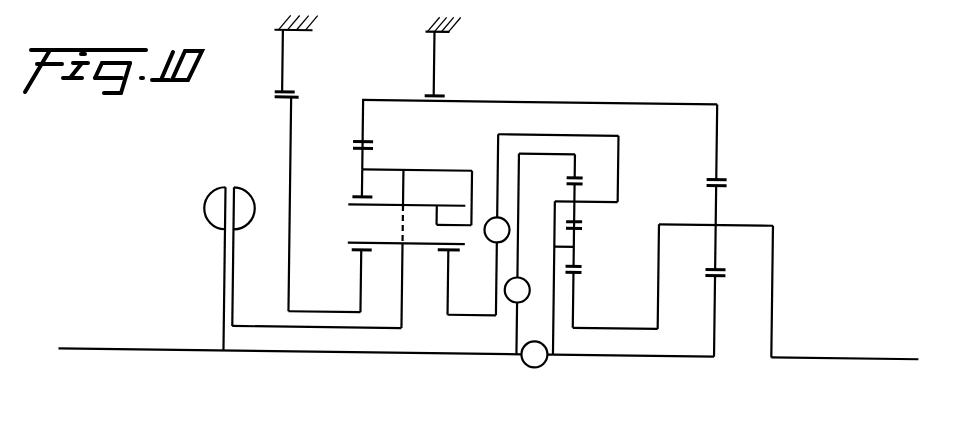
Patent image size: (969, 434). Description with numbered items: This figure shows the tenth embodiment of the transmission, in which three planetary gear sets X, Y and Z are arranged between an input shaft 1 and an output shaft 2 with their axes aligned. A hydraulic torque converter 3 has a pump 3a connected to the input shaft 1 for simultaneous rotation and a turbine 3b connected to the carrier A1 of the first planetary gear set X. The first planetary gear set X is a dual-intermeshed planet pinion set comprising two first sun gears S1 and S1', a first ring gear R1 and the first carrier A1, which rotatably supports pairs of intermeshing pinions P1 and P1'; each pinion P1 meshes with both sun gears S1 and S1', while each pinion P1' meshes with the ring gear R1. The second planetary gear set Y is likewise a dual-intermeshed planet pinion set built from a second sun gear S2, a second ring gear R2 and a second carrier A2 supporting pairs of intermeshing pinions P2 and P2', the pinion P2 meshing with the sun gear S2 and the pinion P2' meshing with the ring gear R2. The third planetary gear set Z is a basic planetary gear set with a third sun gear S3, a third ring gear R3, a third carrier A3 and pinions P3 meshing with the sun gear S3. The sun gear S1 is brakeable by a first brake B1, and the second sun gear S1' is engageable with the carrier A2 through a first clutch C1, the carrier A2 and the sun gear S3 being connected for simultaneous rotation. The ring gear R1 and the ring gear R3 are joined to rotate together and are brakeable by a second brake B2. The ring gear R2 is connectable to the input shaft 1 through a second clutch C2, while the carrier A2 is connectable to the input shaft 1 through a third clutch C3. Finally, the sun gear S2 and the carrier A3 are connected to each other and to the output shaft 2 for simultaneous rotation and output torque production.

The input shaft 1 is at (111, 353).
The output shaft 2 is at (817, 356).
The hydraulic torque converter 3 is at (261, 255).
The pump 3a is at (212, 227).
The turbine 3b is at (242, 230).
The first brake B1 is at (287, 89).
The second brake B2 is at (443, 94).
The first clutch C1 is at (494, 243).
The second clutch C2 is at (520, 277).
The third clutch C3 is at (539, 367).
The first planetary gear set X is at (393, 183).
The second planetary gear set Y is at (585, 273).
The third planetary gear set Z is at (700, 252).
The first ring gear R1 is at (362, 129).
The pinion P1 is at (406, 246).
The pinion P1' is at (387, 187).
The first sun gear S1 is at (330, 204).
The second sun gear of the first planetary gear set S1' is at (457, 291).
The first carrier A1 is at (472, 188).
The second ring gear R2 is at (574, 167).
The pinion P2 is at (605, 265).
The pinion P2' is at (608, 226).
The second sun gear S2 is at (574, 302).
The second carrier A2 is at (617, 183).
The third ring gear R3 is at (716, 147).
The pinion P3 is at (716, 245).
The third sun gear S3 is at (716, 331).
The third carrier A3 is at (773, 242).